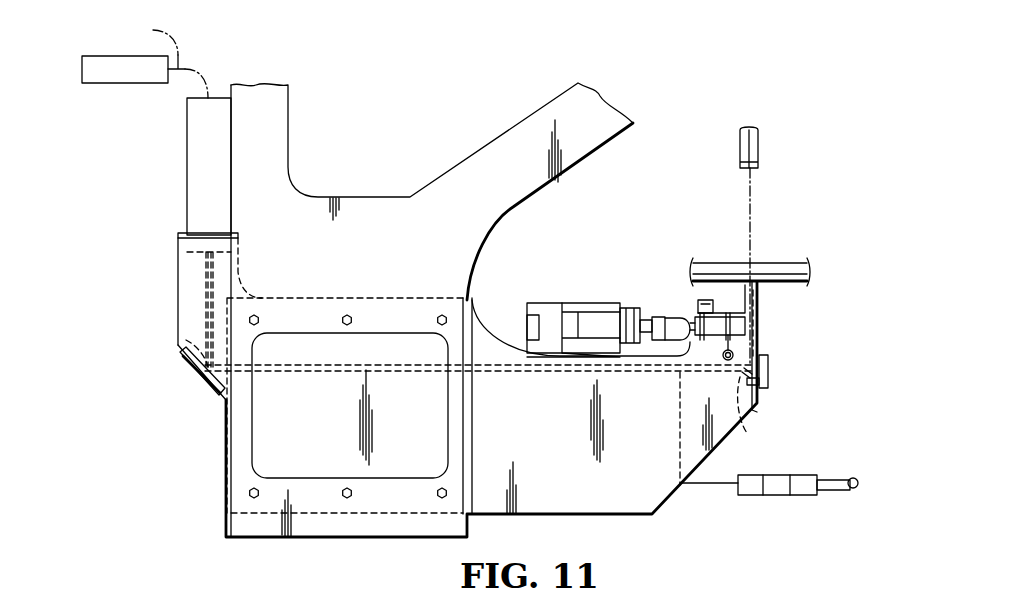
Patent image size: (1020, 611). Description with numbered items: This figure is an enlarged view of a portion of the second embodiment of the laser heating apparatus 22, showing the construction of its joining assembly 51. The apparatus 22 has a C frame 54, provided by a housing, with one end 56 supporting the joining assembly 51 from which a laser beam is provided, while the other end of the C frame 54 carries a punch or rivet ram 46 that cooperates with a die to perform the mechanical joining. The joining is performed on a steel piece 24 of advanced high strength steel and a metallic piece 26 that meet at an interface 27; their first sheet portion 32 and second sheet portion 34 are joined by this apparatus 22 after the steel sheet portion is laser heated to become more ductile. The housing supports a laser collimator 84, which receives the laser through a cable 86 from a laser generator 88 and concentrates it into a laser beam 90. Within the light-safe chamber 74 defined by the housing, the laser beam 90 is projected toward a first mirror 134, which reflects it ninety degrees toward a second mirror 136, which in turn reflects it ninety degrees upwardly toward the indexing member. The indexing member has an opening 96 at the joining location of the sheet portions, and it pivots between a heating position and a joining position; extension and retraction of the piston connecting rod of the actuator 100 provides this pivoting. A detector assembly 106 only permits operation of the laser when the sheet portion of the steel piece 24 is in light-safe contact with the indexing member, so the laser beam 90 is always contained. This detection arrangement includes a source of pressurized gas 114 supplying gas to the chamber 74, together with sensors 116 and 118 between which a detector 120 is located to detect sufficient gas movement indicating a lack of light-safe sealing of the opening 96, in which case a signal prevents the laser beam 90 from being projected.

The laser heating apparatus 22 is at (757, 92).
The steel piece 24 is at (783, 283).
The metallic piece 26 is at (793, 267).
The interface 27 is at (728, 263).
The first sheet portion 32 is at (768, 283).
The second sheet portion 34 is at (770, 297).
The punch or rivet ram 46 is at (760, 152).
The joining assembly 51 is at (826, 293).
The C frame 54 is at (228, 85).
The one end 56 is at (760, 402).
The light-safe chamber 74 is at (512, 371).
The laser collimator 84 is at (187, 167).
The cable 86 is at (169, 59).
The laser generator 88 is at (125, 69).
The laser beam 90 is at (756, 347).
The opening 96 is at (742, 295).
The actuator 100 is at (587, 302).
The detector assembly 106 is at (712, 499).
The source of pressurized gas 114 is at (853, 478).
The sensor 116 is at (753, 497).
The sensor 118 is at (805, 497).
The detector 120 is at (777, 497).
The first mirror 134 is at (200, 360).
The second mirror 136 is at (747, 420).